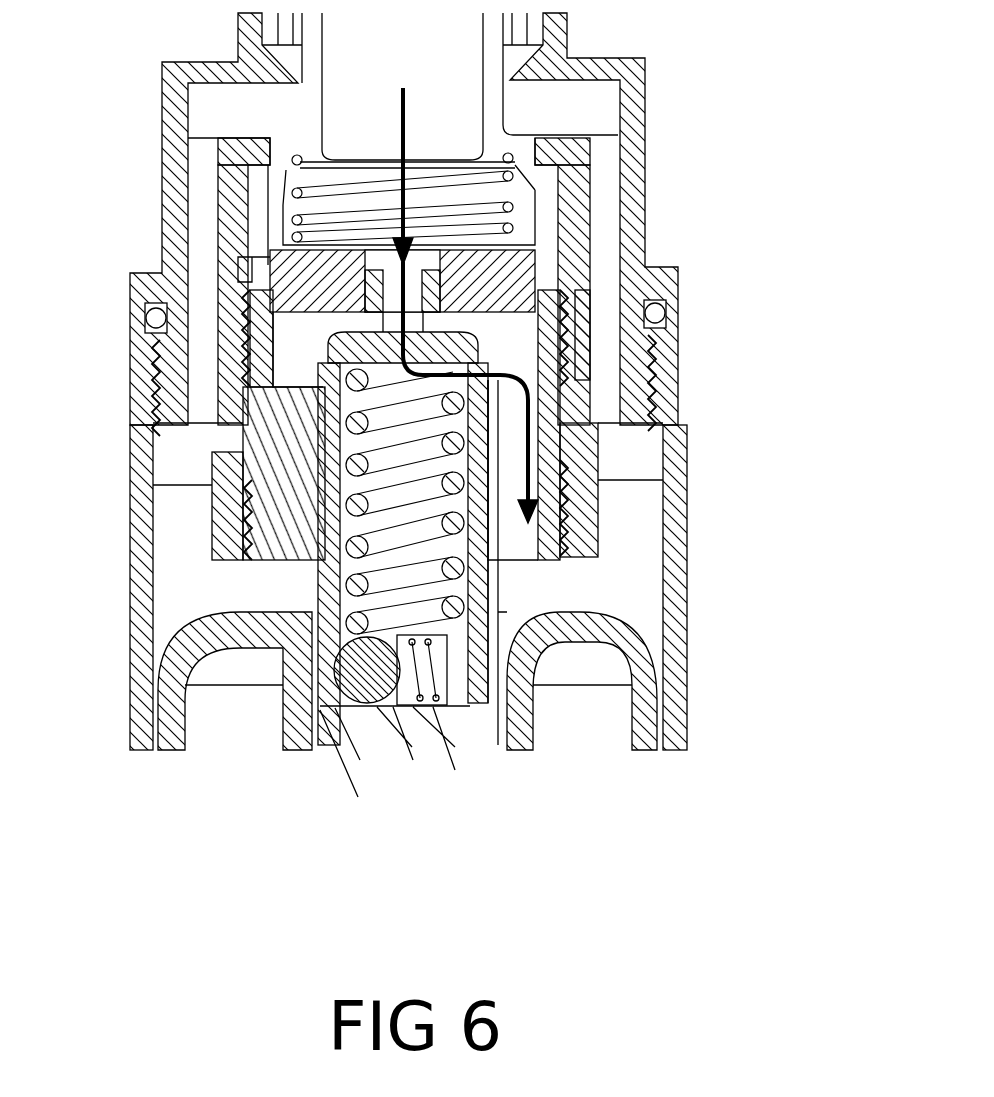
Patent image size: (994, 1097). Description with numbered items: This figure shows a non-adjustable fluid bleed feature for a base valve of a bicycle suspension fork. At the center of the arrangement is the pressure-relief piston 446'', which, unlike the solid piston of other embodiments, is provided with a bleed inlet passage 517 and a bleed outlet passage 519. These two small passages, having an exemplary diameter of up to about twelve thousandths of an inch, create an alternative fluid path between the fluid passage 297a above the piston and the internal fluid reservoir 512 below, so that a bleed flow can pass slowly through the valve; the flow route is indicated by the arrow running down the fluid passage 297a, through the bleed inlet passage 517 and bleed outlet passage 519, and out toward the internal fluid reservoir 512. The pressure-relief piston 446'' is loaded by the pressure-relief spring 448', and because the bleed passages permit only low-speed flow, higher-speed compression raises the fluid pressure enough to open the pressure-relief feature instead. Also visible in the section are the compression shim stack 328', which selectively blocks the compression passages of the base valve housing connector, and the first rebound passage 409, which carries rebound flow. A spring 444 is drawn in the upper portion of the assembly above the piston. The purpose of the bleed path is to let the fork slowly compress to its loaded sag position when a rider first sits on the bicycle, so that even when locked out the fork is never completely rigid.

The fluid passage 297a is at (452, 93).
The wave spring 444 is at (296, 214).
The bleed inlet passage 517 is at (390, 338).
The bleed outlet passage 519 is at (470, 363).
The pressure-relief piston 446'' is at (215, 425).
The compression shim stack 328' is at (689, 425).
The first rebound passage 409 is at (535, 540).
The internal fluid reservoir 512 is at (615, 583).
The pressure-relief spring 448' is at (644, 554).